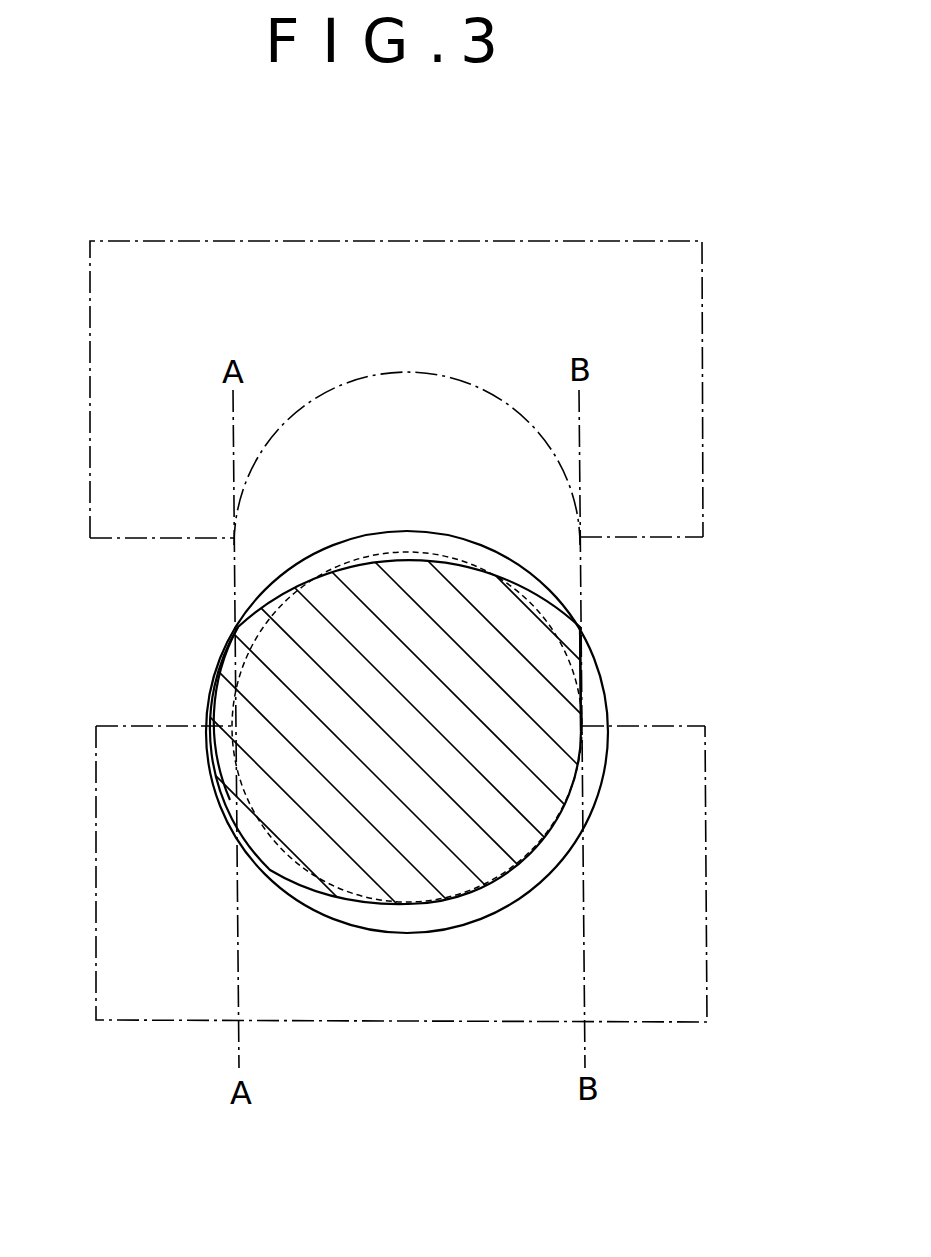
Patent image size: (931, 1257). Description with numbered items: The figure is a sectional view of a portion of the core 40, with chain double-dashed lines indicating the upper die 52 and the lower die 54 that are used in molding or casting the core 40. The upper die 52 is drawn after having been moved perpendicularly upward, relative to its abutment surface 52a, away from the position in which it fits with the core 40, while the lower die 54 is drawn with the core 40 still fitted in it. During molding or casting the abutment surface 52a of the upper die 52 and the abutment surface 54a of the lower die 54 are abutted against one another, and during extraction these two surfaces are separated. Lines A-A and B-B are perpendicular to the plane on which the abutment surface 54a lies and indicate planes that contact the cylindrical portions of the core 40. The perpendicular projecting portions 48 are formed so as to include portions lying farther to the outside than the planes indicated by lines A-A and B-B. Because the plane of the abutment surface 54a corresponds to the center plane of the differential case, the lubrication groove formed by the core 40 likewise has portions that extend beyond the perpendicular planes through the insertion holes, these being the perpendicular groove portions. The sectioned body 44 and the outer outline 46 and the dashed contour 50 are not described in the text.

The core 40 is at (430, 467).
The core member 44 is at (453, 597).
The outer tubular member 46 is at (446, 512).
The perpendicular projecting portions 48 is at (219, 692).
The original circular contour 50 is at (372, 548).
The upper die 52 is at (605, 272).
The abutment surface 52a is at (633, 538).
The lower die 54 is at (370, 995).
The abutment surface 54a is at (688, 723).